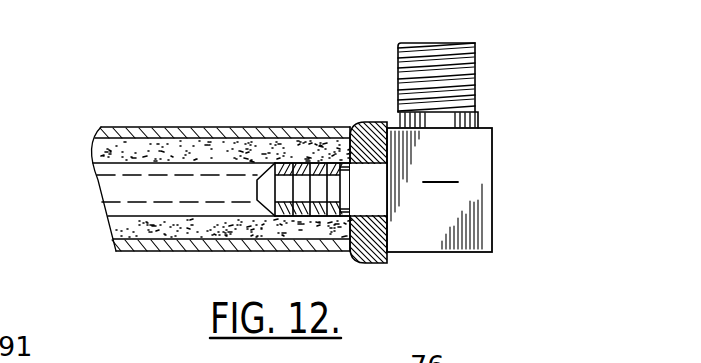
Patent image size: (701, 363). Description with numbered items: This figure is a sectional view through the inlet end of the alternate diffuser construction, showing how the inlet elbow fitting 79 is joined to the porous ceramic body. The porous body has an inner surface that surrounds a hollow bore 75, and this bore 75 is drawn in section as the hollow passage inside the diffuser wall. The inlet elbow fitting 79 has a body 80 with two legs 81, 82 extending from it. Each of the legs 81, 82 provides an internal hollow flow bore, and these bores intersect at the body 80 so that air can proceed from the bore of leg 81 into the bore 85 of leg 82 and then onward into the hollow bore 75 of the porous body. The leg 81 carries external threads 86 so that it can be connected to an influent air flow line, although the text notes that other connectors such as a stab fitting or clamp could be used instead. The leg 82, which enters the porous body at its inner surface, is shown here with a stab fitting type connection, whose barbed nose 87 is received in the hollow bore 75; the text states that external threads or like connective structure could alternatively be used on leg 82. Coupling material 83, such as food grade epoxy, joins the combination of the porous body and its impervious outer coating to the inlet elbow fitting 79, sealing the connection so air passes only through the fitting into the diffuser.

The hollow bore 75 is at (104, 195).
The inlet elbow fitting 79 is at (492, 153).
The body 80 is at (441, 170).
The leg 81 is at (477, 64).
The leg 82 is at (372, 262).
The coupling material 83 is at (366, 143).
The flow bore 85 is at (260, 183).
The external threads 86 is at (477, 94).
The barbed nipple 87 is at (286, 196).